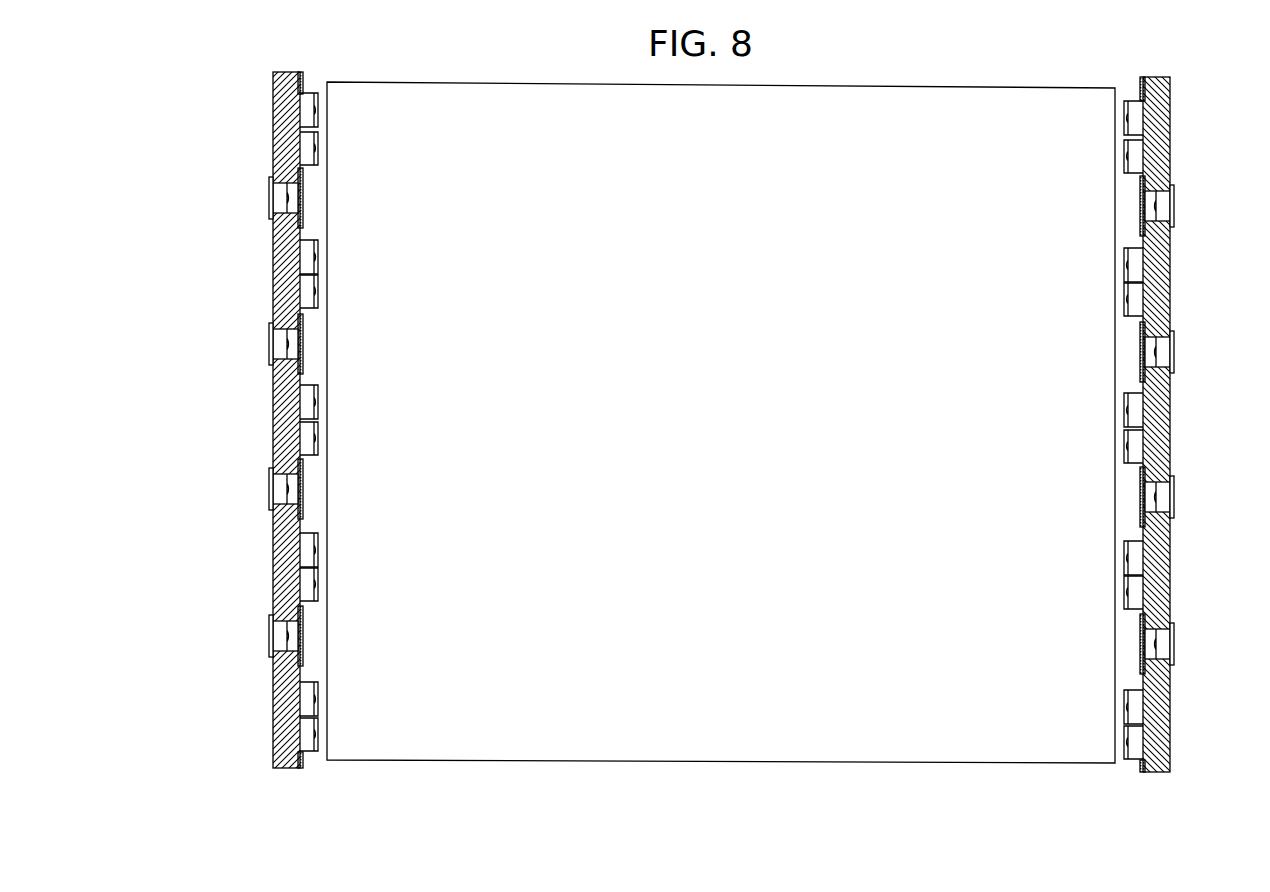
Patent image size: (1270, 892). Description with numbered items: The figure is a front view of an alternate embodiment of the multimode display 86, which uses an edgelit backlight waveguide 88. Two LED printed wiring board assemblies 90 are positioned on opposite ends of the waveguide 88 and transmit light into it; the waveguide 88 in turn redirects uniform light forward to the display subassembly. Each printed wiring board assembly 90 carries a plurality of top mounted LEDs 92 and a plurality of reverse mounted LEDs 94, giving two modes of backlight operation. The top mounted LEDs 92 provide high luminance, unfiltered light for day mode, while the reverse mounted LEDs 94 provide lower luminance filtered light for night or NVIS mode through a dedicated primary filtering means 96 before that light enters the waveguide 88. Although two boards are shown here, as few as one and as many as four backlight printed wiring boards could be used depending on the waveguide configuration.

The multimode display 86 is at (703, 437).
The backlight waveguide 88 is at (435, 762).
The LED printed wiring board assembly 90 is at (270, 768).
The top mounted LEDs 92 is at (290, 699).
The reverse mounted LEDs 94 is at (268, 632).
The dedicated primary filtering means 96 is at (290, 376).